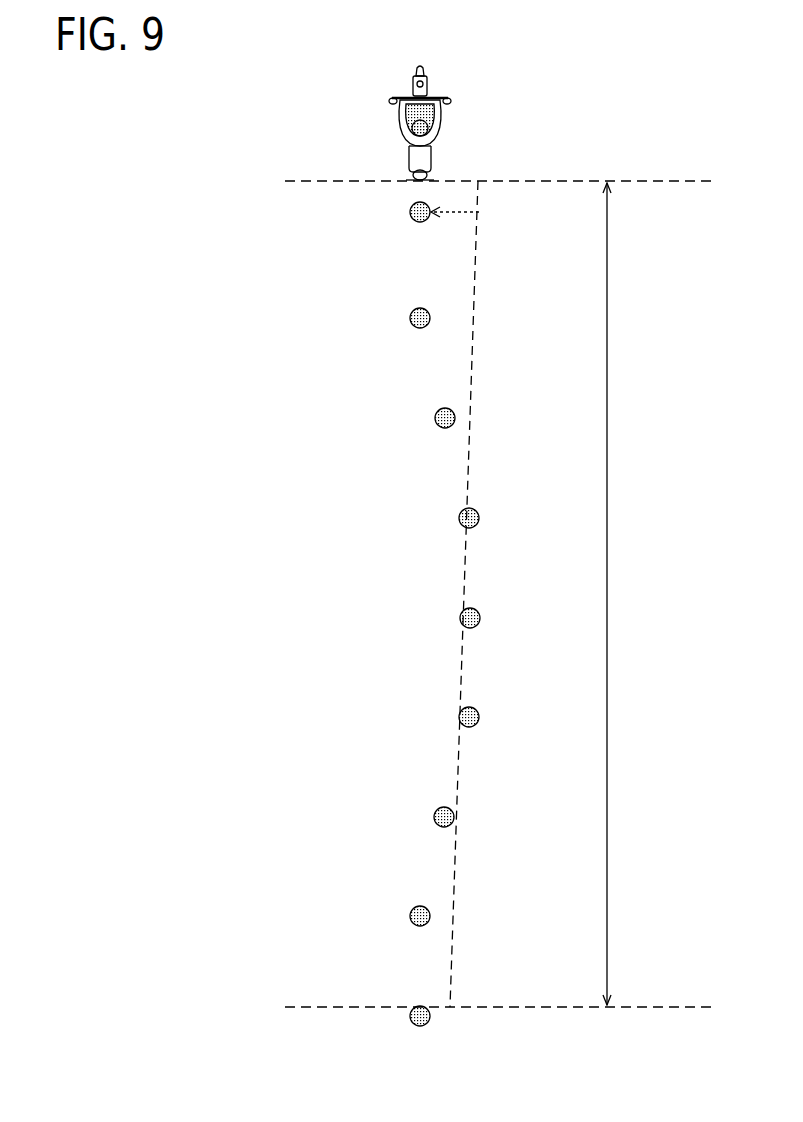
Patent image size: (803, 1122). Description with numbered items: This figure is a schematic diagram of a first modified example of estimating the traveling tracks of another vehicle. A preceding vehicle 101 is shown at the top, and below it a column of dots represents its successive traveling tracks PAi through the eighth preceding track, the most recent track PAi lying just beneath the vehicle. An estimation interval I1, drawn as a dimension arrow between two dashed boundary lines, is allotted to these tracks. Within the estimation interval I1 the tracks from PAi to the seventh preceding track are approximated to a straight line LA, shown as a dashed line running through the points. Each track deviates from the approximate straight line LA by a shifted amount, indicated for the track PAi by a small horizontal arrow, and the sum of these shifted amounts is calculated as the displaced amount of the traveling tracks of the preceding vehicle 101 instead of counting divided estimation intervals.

The preceding vehicle 101 is at (400, 132).
The traveling track PAi is at (410, 212).
The approximate straight line LA is at (475, 338).
The estimation interval I1 is at (624, 594).